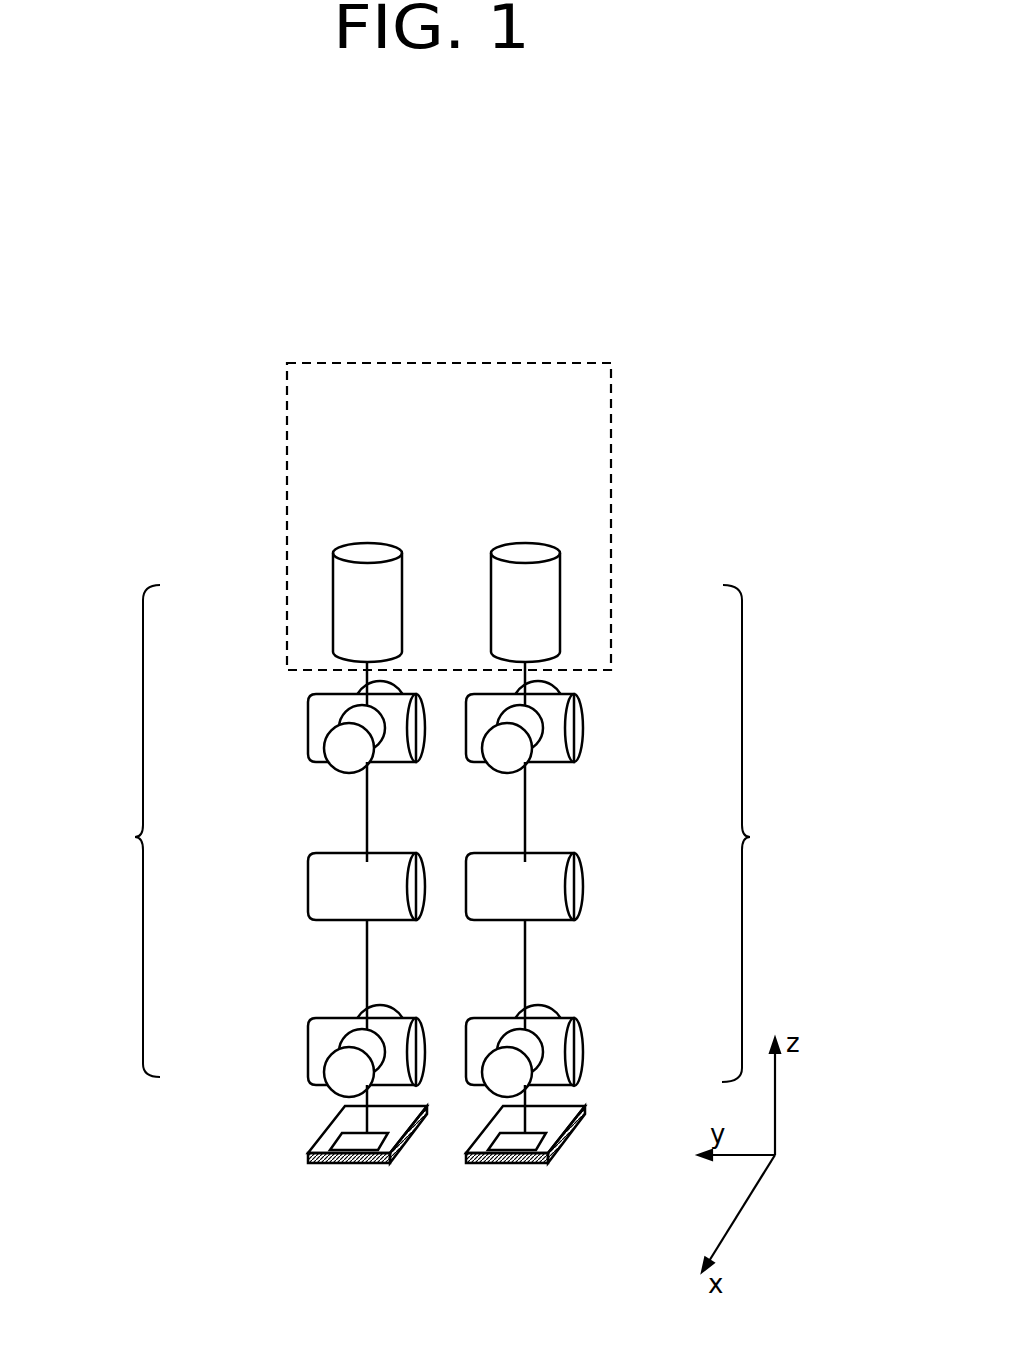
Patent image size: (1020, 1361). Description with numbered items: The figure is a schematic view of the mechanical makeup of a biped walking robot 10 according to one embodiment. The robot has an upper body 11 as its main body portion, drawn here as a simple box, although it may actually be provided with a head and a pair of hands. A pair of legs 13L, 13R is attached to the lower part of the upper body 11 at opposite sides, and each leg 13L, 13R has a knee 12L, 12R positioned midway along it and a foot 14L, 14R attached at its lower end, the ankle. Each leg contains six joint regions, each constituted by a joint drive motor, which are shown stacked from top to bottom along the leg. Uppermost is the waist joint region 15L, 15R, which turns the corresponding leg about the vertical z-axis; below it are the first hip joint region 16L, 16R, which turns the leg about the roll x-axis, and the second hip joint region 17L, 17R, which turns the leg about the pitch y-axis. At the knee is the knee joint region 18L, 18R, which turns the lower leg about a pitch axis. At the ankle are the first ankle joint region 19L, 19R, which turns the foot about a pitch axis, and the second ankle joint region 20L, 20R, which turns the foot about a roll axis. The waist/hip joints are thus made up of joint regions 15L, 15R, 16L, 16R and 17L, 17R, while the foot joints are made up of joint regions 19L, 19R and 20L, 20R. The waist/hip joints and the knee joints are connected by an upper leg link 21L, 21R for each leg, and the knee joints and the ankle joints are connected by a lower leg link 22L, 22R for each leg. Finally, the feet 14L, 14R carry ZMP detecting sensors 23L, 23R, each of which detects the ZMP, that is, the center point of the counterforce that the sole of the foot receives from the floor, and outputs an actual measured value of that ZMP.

The biped walking robot 10 is at (667, 332).
The upper body 11 is at (611, 430).
The knee 12R is at (297, 845).
The knee 12L is at (593, 842).
The leg 13R is at (114, 831).
The leg 13L is at (766, 833).
The foot 14R is at (333, 1131).
The foot 14L is at (572, 1127).
The waist joint region 15R is at (347, 617).
The waist joint region 15L is at (540, 610).
The first hip joint region 16R is at (343, 761).
The first hip joint region 16L is at (518, 760).
The second hip joint region 17R is at (315, 712).
The second hip joint region 17L is at (575, 724).
The knee joint region 18R is at (307, 890).
The knee joint region 18L is at (577, 883).
The first ankle joint region 19R is at (308, 1046).
The first ankle joint region 19L is at (573, 1055).
The second ankle joint region 20R is at (343, 1083).
The second ankle joint region 20L is at (520, 1080).
The upper leg link 21R is at (367, 818).
The upper leg link 21L is at (525, 812).
The lower leg link 22R is at (367, 967).
The lower leg link 22L is at (525, 967).
The ZMP detecting sensor 23R is at (352, 1142).
The ZMP detecting sensor 23L is at (512, 1142).